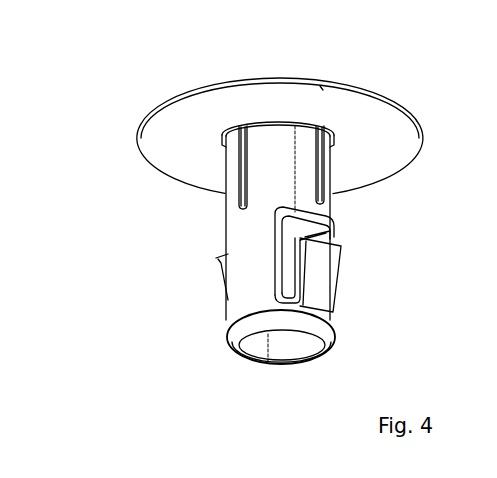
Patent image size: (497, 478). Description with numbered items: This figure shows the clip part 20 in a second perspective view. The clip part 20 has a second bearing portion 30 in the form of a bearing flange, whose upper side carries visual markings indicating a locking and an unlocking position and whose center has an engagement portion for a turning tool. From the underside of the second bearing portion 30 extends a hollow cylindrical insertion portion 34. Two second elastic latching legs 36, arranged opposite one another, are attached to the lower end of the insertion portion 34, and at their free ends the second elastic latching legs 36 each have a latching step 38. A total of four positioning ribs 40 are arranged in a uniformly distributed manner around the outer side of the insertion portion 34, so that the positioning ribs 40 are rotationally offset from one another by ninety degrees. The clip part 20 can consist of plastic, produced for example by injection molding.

The clip part 20 is at (108, 203).
The second bearing portion 30 is at (372, 110).
The insertion portion 34 is at (242, 305).
The second elastic latching legs 36 is at (222, 263).
The latching step 38 is at (326, 233).
The positioning ribs 40 is at (236, 203).